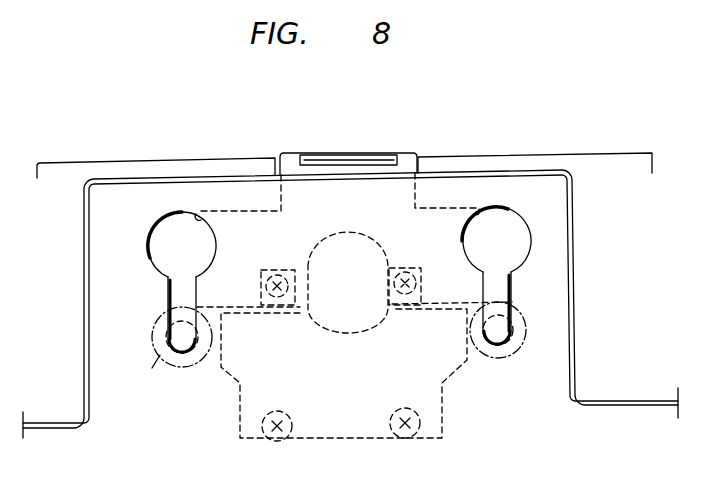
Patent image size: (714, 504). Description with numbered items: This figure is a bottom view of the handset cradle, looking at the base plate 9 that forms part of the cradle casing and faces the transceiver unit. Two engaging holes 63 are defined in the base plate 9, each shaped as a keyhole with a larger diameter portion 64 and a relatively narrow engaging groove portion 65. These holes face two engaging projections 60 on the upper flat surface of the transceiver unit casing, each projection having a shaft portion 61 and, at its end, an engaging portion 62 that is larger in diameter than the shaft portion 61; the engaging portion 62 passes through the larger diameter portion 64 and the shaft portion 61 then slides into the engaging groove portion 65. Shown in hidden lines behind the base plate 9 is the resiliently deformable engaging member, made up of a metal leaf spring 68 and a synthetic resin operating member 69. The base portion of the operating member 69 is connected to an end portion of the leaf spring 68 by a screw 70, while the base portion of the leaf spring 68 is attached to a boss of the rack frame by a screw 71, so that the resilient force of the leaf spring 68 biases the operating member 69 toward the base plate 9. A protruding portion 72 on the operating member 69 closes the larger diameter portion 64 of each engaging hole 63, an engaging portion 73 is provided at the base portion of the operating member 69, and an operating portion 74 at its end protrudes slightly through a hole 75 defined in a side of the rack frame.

The base plate 9 is at (552, 187).
The engaging projection 60 is at (153, 347).
The shaft portion 61 is at (185, 353).
The engaging portion 62 is at (144, 374).
The engaging hole 63 is at (177, 218).
The larger diameter portion 64 is at (198, 222).
The engaging groove portion 65 is at (177, 290).
The leaf spring 68 is at (432, 383).
The operating member 69 is at (437, 212).
The screw 70 is at (272, 297).
The screw 71 is at (396, 414).
The protruding portion 72 is at (170, 242).
The engaging portion 73 is at (170, 318).
The operating portion 74 is at (345, 155).
The hole 75 is at (277, 157).